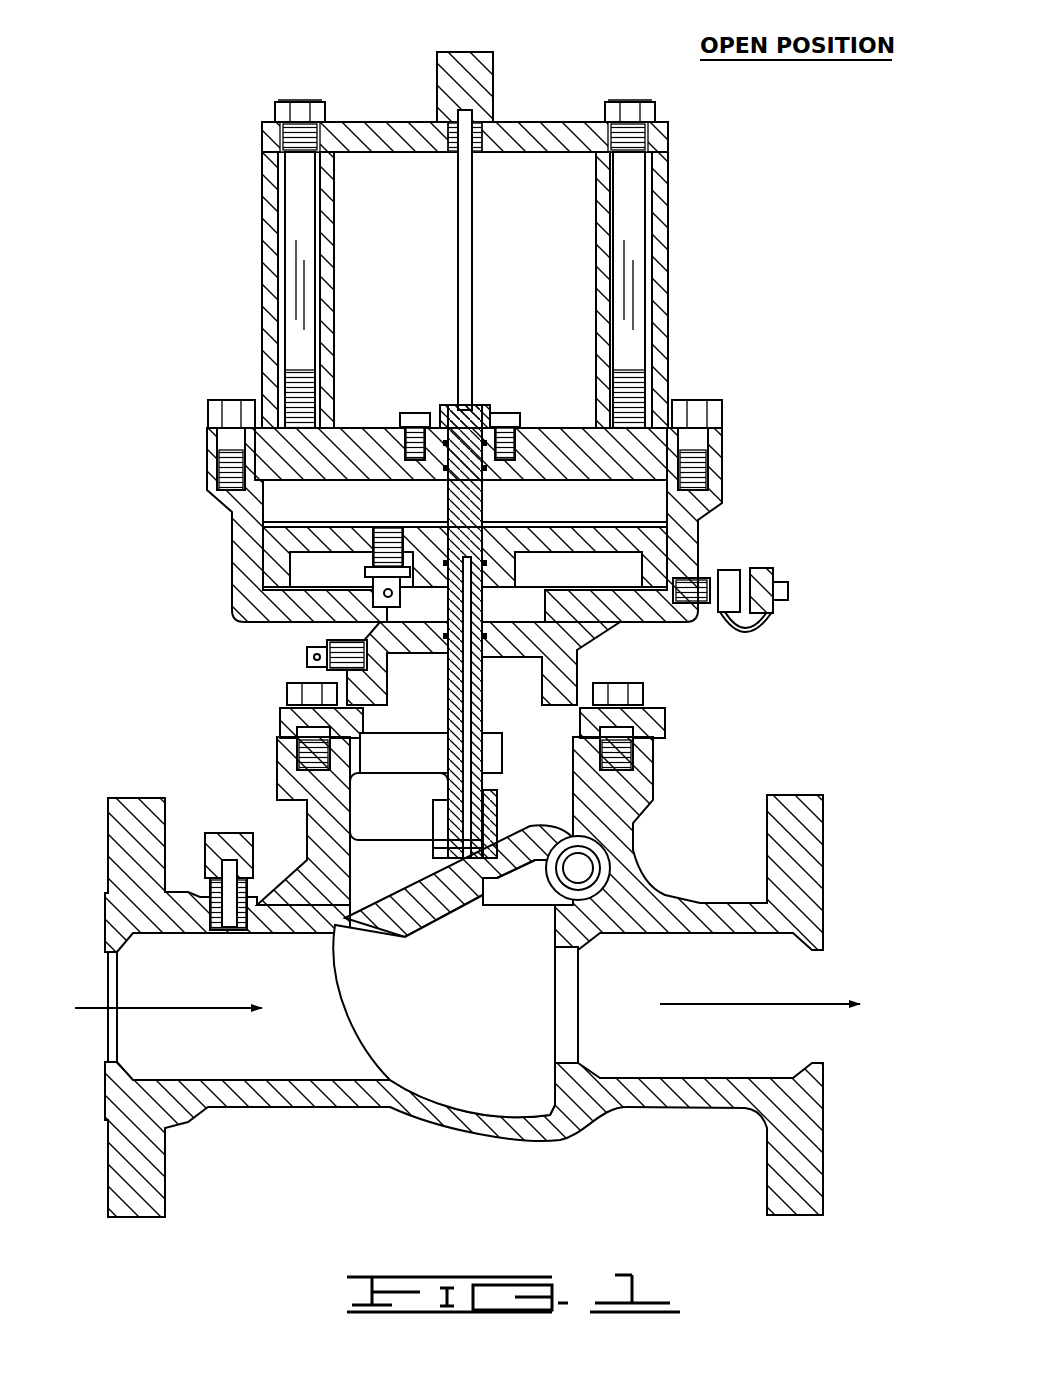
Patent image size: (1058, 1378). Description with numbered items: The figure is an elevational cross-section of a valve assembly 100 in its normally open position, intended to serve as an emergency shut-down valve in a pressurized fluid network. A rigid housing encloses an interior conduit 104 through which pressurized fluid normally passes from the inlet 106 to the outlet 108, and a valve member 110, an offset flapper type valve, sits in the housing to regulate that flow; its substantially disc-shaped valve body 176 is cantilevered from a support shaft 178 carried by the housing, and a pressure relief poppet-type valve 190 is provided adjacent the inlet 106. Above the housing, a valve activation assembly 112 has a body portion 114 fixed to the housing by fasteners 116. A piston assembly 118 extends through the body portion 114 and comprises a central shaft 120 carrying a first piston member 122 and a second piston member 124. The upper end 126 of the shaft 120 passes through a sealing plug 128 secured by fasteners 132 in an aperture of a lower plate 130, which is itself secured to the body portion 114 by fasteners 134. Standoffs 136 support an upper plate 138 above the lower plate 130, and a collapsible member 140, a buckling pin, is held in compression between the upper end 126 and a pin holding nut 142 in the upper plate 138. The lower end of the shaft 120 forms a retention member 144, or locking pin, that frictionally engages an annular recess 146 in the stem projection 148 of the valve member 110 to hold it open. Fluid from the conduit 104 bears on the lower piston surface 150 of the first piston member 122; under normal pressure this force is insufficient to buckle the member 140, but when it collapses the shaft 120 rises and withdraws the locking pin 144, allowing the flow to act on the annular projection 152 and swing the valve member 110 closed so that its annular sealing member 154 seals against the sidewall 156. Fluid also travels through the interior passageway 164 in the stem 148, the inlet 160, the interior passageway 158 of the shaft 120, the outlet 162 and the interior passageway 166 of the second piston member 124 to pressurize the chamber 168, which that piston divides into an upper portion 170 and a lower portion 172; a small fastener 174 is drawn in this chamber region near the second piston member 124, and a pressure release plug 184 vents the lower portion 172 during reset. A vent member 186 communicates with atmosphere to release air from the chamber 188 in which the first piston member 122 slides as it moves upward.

The valve assembly 100 is at (462, 617).
The interior conduit 104 is at (313, 1052).
The inlet 106 is at (115, 1063).
The outlet 108 is at (818, 1060).
The valve member 110 is at (460, 894).
The valve activation assembly 112 is at (460, 438).
The body portion 114 is at (465, 525).
The fasteners 116 is at (290, 690).
The piston assembly 118 is at (482, 507).
The central shaft 120 is at (478, 610).
The first piston member 122 is at (440, 736).
The second piston member 124 is at (345, 524).
The upper end 126 is at (480, 405).
The sealing plug 128 is at (450, 408).
The lower plate 130 is at (355, 450).
The fasteners 132 is at (418, 413).
The fasteners 134 is at (232, 400).
The standoffs 136 is at (272, 195).
The upper plate 138 is at (400, 122).
The collapsible member 140 is at (472, 240).
The pin holding nut 142 is at (478, 56).
The retention member 144 is at (445, 830).
The annular recess 146 is at (490, 805).
The stem projection 148 is at (434, 812).
The lower piston surface 150 is at (498, 738).
The annular projection 152 is at (374, 930).
The annular sealing member 154 is at (505, 860).
The sidewall 156 is at (553, 1075).
The interior passageway 158 is at (345, 628).
The inlet 160 is at (478, 858).
The outlet 162 is at (632, 565).
The interior passageway 164 is at (455, 848).
The interior passageway 166 is at (448, 560).
The chamber 168 is at (275, 500).
The upper portion 170 is at (640, 503).
The lower portion 172 is at (668, 540).
The fastener 174 is at (373, 560).
The valve body 176 is at (462, 892).
The support shaft 178 is at (580, 868).
The pressure release plug 184 is at (762, 575).
The vent member 186 is at (305, 652).
The chamber 188 is at (514, 684).
The pressure relief poppet-type valve 190 is at (238, 833).